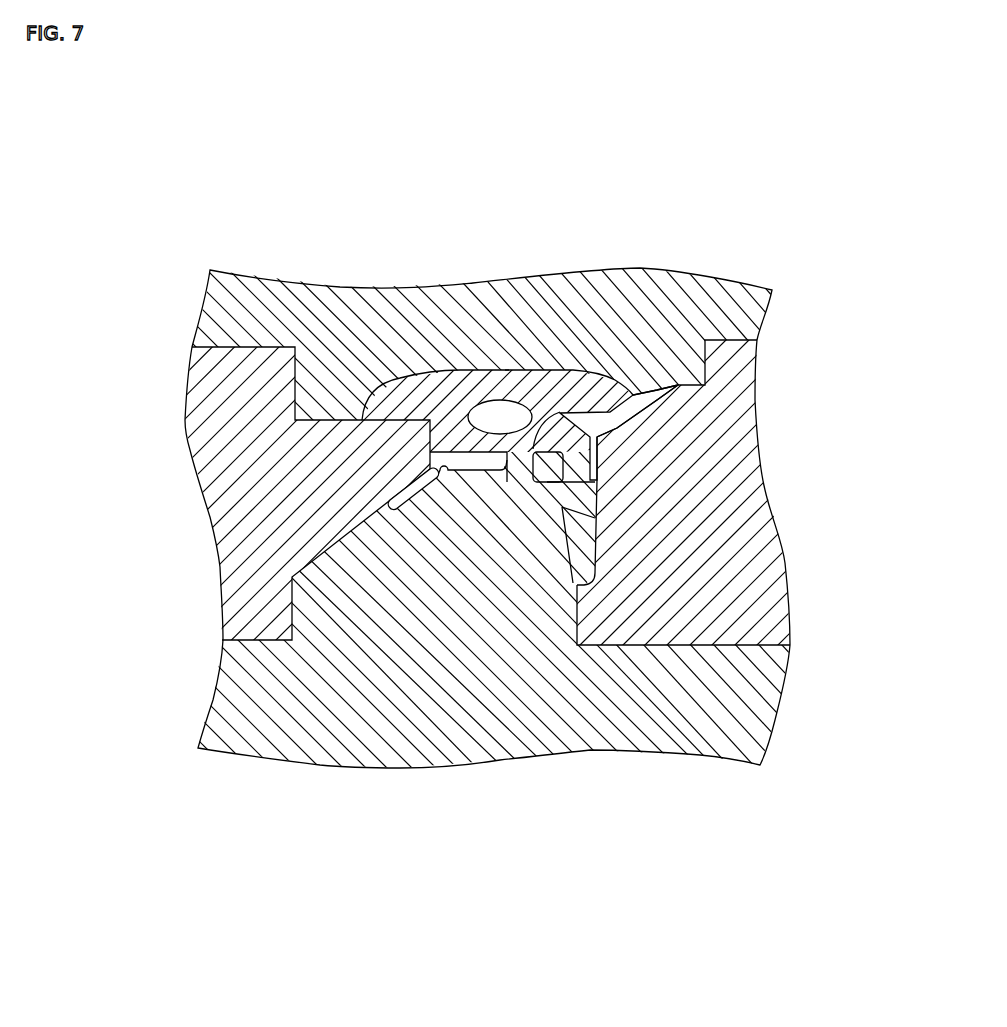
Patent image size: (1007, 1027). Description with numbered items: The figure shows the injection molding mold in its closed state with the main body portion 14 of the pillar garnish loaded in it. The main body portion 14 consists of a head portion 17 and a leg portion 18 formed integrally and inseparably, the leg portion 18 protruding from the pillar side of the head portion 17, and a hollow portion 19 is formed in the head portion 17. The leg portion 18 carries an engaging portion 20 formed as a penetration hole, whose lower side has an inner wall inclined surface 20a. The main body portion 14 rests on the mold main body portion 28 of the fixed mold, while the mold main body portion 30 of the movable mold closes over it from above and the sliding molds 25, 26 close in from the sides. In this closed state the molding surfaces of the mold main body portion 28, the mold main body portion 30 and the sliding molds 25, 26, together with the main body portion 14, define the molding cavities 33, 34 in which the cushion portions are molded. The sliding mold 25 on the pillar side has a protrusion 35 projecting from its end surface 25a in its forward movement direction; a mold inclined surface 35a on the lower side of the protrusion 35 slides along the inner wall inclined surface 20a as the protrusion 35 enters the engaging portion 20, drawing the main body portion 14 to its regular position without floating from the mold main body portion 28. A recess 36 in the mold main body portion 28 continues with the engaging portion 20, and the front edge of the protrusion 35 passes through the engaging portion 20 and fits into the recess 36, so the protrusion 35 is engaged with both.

The main body portion 14 is at (507, 365).
The head portion 17 is at (462, 370).
The leg portion 18 is at (612, 565).
The hollow portion 19 is at (500, 410).
The engaging portion 20 is at (600, 488).
The inner wall inclined surface 20a is at (596, 500).
The sliding mold 25 is at (713, 547).
The end surface 25a is at (605, 475).
The sliding mold 26 is at (243, 460).
The mold main body portion 28 is at (420, 705).
The mold main body portion 30 is at (570, 317).
The molding cavity 33 is at (660, 430).
The molding cavity 34 is at (403, 493).
The protrusion 35 is at (620, 410).
The mold inclined surface 35a is at (583, 510).
The recess 36 is at (545, 475).